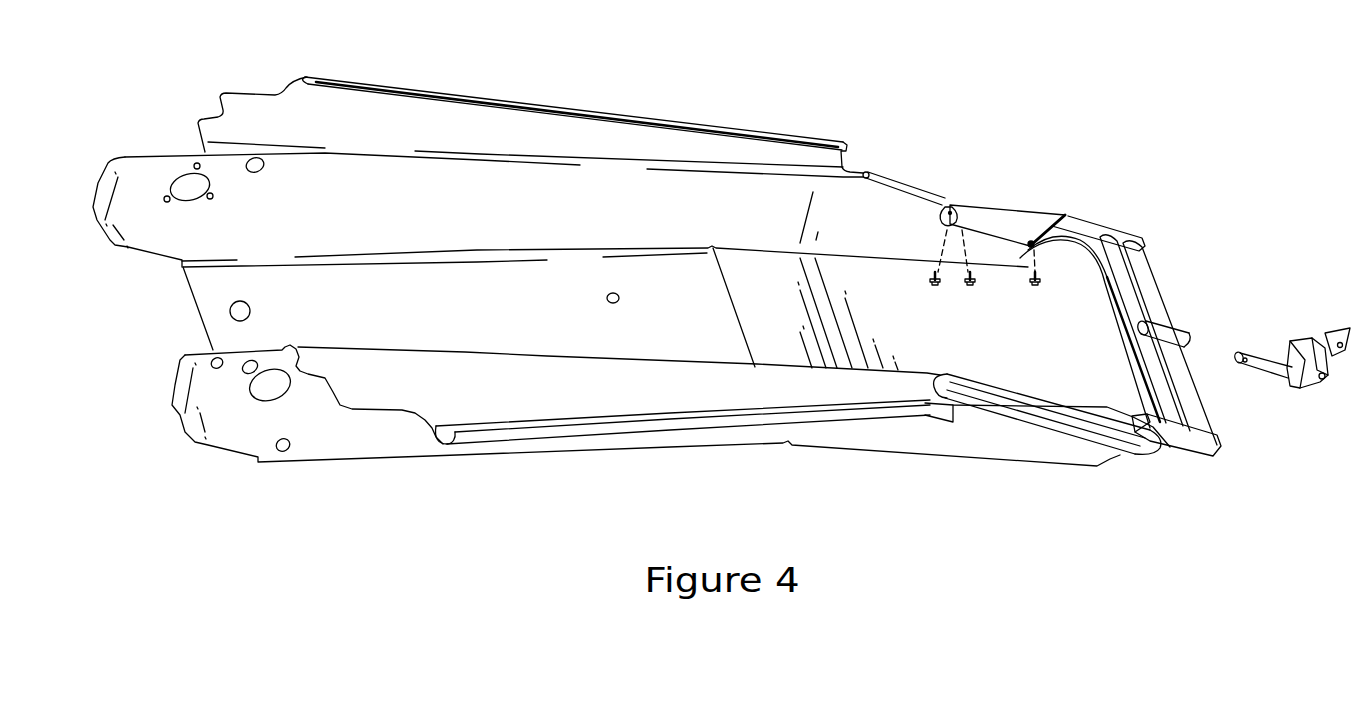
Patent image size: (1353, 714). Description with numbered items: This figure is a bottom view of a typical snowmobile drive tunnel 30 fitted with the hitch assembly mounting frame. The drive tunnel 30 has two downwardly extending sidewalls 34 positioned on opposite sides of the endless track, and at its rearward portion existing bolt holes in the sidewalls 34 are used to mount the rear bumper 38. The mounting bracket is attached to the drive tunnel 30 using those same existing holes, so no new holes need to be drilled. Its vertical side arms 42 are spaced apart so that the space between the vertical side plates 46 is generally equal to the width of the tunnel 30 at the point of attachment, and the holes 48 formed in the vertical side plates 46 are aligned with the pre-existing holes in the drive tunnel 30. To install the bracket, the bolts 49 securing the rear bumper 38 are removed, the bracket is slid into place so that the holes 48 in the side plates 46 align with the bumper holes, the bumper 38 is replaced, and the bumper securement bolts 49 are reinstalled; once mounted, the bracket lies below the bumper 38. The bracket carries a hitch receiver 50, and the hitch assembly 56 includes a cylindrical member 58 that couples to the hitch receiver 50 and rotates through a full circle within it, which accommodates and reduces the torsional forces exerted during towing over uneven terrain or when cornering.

The drive tunnel 30 is at (726, 127).
The downwardly extending sidewalls 34 is at (880, 222).
The rear bumper 38 is at (1127, 455).
The vertical side arms 42 is at (1087, 230).
The vertical side plates 46 is at (1043, 223).
The holes 48 is at (1030, 244).
The bumper securement bolts 49 is at (935, 286).
The hitch receiver 50 is at (1180, 333).
The hitch assembly 56 is at (1305, 337).
The cylindrical member 58 is at (1265, 368).